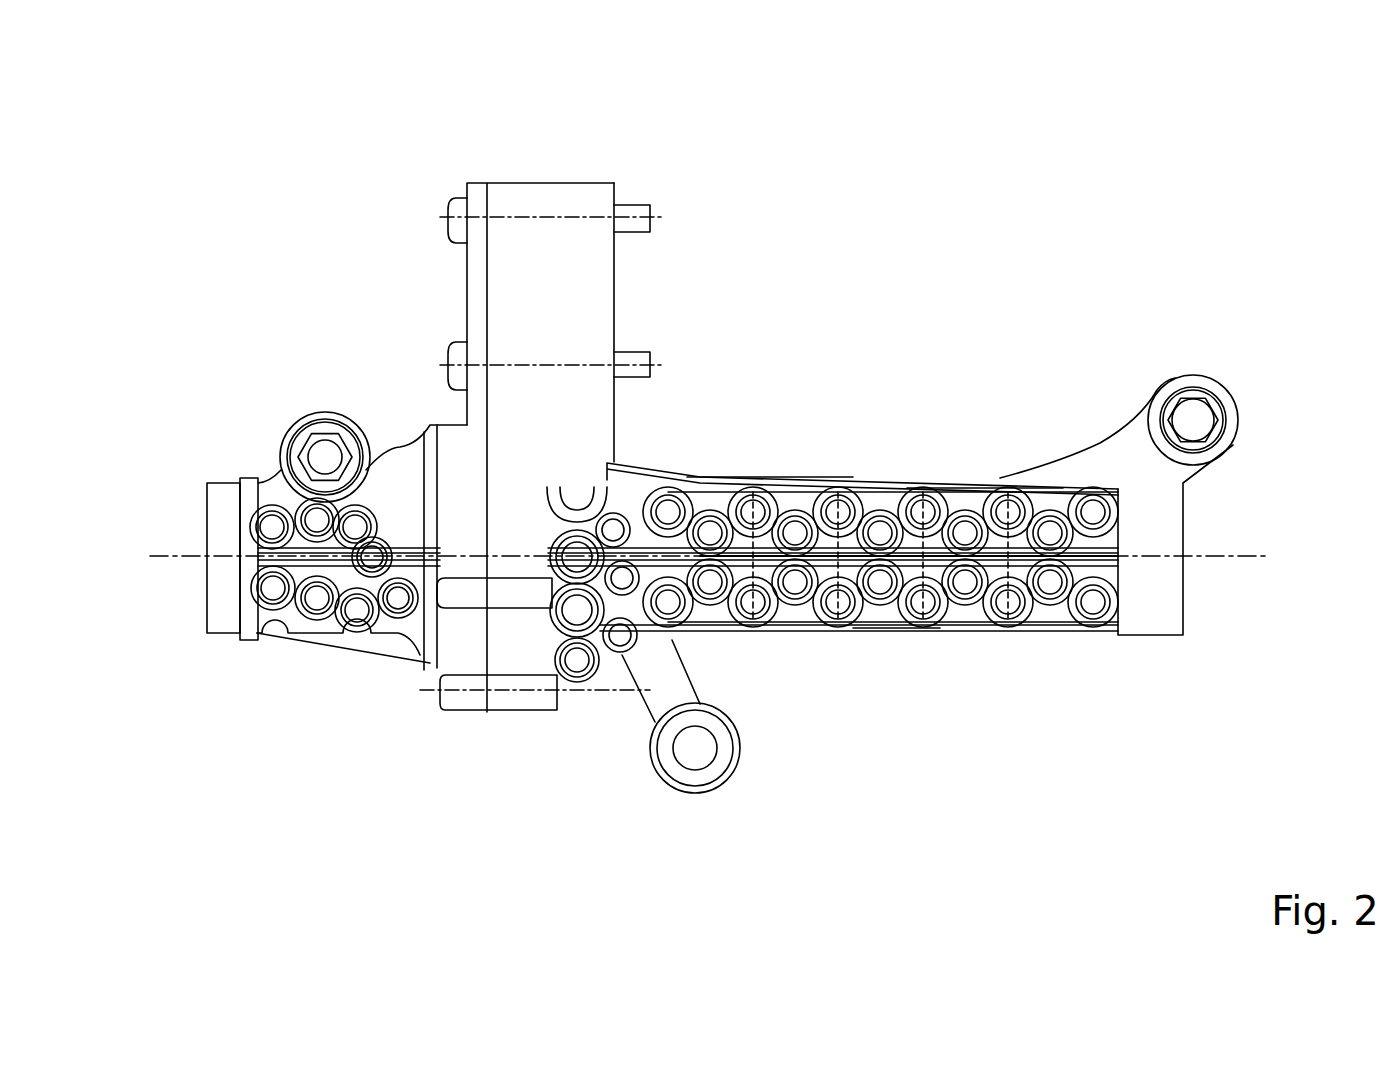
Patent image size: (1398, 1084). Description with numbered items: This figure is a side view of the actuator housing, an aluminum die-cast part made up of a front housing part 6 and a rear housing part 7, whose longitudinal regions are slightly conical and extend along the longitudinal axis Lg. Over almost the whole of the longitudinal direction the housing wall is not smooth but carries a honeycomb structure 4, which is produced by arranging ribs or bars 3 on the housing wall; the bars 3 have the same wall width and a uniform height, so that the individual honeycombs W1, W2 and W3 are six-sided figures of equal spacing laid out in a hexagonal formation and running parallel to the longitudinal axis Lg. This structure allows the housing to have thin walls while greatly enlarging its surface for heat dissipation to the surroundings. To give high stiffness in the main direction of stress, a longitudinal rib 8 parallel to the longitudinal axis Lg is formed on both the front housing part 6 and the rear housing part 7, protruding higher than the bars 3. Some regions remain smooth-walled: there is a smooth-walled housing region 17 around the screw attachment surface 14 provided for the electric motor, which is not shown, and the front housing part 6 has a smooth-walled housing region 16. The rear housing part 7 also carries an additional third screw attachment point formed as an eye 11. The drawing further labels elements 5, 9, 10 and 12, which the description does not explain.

The ribs or bars 3 is at (650, 462).
The honeycomb structure 4 is at (1005, 707).
The tube bundle 5 is at (922, 210).
The front housing part 6 is at (372, 695).
The rear housing part 7 is at (1100, 688).
The longitudinal rib 8 is at (260, 520).
The coupling body 9 is at (453, 195).
The fastening eye 10 is at (327, 430).
The eye 11 is at (300, 412).
The connection flange 12 is at (487, 198).
The screw attachment surface 14 is at (633, 255).
The smooth-walled housing region 16 is at (458, 630).
The smooth-walled housing region 17 is at (551, 303).
The honeycomb W1 is at (853, 465).
The honeycomb W2 is at (940, 633).
The honeycomb W3 is at (1057, 470).
The longitudinal axis Lg is at (183, 557).